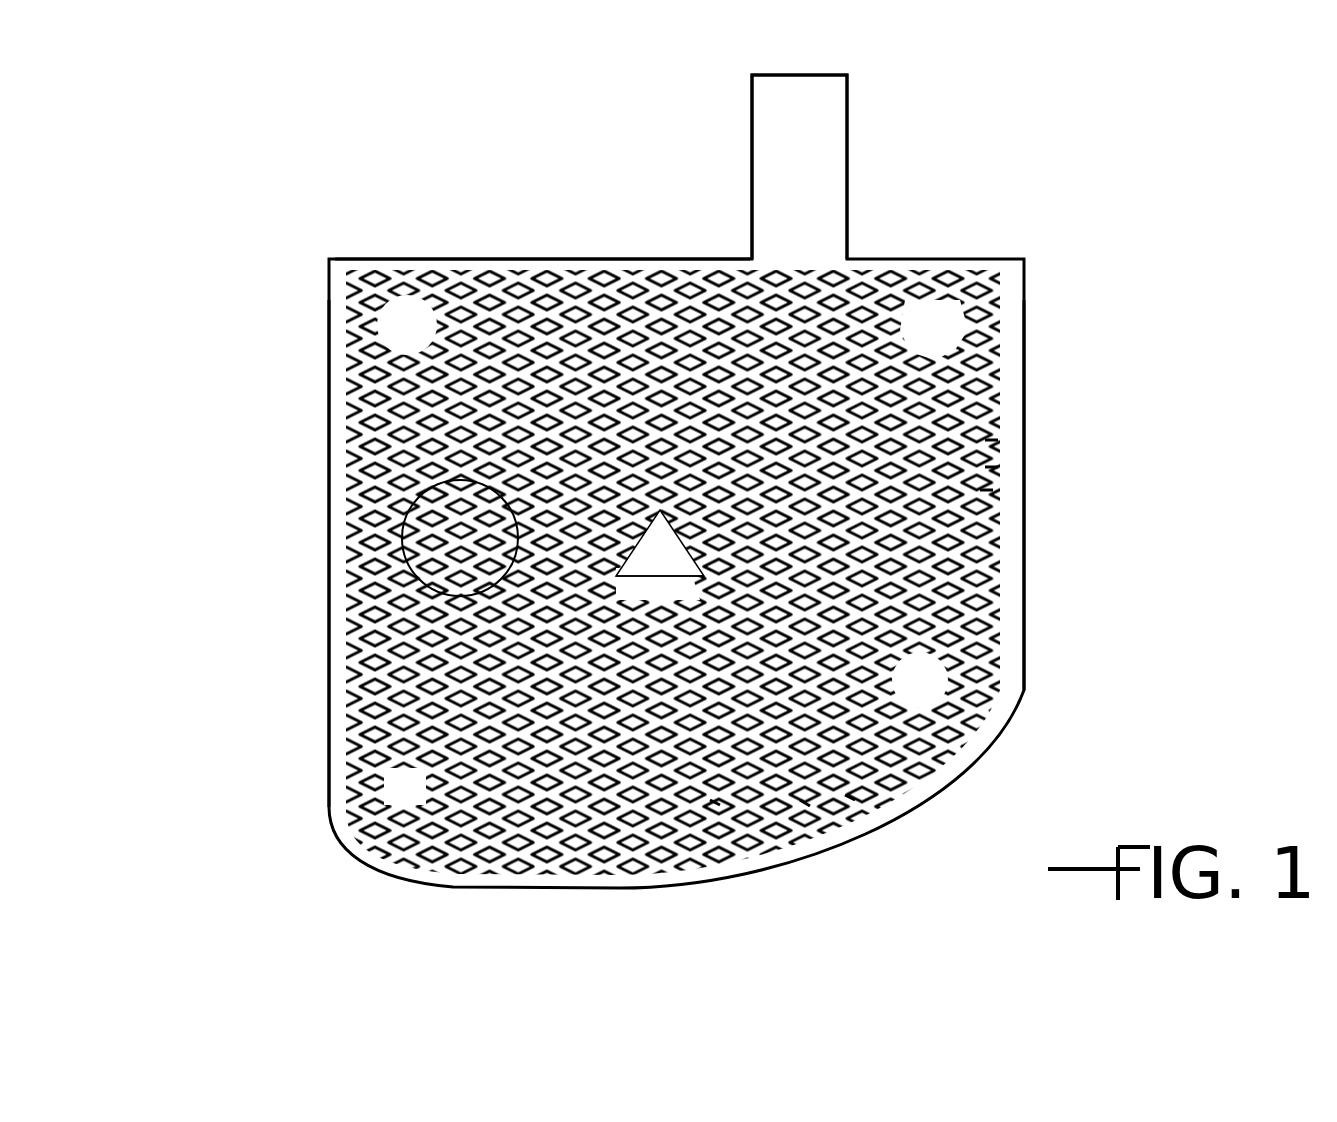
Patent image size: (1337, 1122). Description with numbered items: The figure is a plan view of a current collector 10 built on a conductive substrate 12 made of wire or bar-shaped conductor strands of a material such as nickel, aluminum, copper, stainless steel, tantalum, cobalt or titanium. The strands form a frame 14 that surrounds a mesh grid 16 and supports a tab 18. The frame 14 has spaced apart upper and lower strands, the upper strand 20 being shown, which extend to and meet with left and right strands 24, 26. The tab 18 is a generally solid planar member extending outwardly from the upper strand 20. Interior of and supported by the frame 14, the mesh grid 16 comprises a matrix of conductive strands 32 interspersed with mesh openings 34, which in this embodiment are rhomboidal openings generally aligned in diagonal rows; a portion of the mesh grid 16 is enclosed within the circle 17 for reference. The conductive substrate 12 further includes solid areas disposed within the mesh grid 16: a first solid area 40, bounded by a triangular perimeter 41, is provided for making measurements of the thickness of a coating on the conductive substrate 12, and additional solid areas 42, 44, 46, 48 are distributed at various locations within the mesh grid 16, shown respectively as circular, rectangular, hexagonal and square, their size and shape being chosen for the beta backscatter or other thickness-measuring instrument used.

The current collector 10 is at (766, 481).
The conductive substrate 12 is at (1032, 379).
The frame 14 is at (522, 258).
The mesh grid 16 is at (437, 549).
The circle 17 is at (403, 514).
The tab 18 is at (823, 147).
The upper strand 20 is at (638, 264).
The left strand 24 is at (341, 734).
The right strand 26 is at (1012, 590).
The conductive strands 32 is at (990, 490).
The mesh openings 34 is at (715, 800).
The first solid area 40 is at (674, 563).
The triangular perimeter 41 is at (697, 598).
The solid area 42 is at (424, 341).
The solid area 44 is at (952, 343).
The solid area 46 is at (937, 697).
The solid area 48 is at (420, 802).